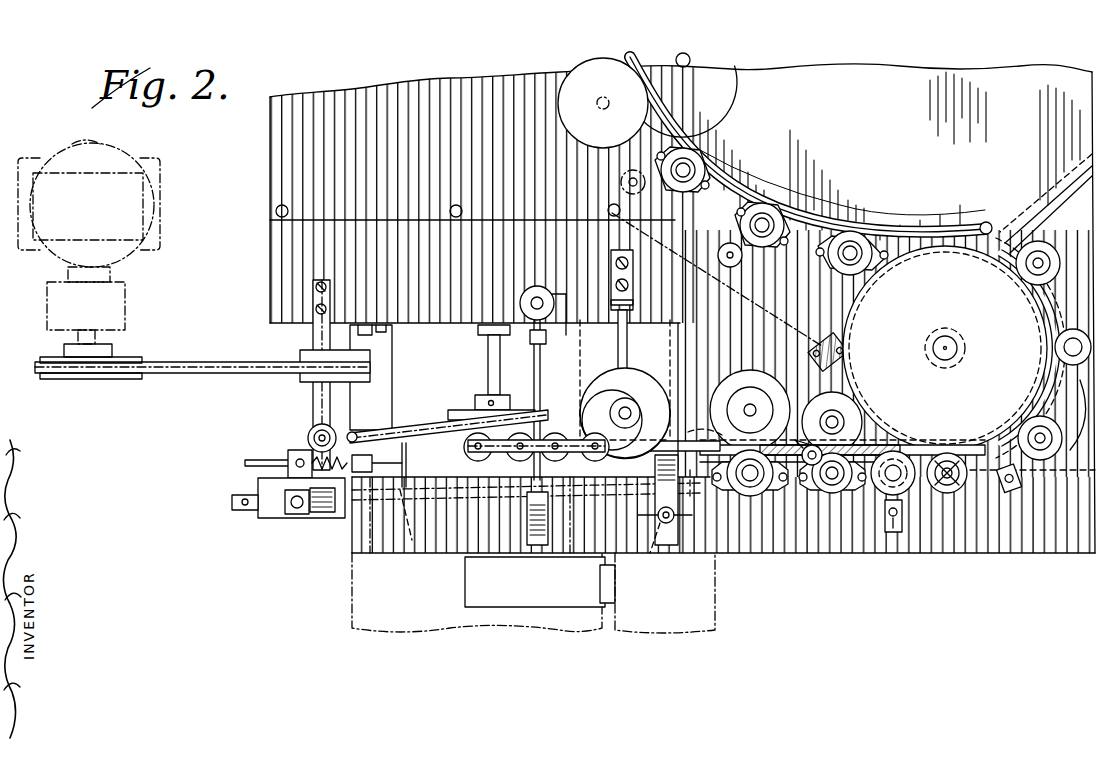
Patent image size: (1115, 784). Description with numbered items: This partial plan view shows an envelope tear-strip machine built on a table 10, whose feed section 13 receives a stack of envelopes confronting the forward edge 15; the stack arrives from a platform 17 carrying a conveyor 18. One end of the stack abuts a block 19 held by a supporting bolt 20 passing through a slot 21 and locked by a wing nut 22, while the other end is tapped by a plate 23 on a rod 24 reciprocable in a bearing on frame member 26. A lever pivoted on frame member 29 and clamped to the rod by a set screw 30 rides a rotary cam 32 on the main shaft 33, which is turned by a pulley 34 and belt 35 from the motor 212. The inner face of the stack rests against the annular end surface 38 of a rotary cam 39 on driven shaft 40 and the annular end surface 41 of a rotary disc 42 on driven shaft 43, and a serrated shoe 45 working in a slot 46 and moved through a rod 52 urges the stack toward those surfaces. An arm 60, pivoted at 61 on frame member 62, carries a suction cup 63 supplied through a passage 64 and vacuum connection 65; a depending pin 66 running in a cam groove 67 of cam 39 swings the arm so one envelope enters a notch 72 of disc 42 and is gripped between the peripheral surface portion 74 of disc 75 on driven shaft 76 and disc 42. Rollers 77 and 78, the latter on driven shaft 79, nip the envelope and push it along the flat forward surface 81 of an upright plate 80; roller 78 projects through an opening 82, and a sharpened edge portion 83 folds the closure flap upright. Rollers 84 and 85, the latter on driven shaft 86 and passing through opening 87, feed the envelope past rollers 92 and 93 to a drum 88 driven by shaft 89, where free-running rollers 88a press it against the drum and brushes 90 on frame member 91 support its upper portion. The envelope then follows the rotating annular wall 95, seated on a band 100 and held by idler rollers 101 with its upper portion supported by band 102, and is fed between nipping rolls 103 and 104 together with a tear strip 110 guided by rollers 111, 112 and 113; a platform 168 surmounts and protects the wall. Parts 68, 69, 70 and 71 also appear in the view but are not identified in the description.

The table 10 is at (1010, 553).
The feed section 13 is at (360, 530).
The forward edge 15 is at (822, 553).
The platform 17 is at (712, 610).
The conveyor 18 is at (480, 606).
The block 19 is at (668, 546).
The supporting bolt 20 is at (662, 560).
The slot 21 is at (695, 515).
The locking wing nut 22 is at (660, 522).
The plate 23 is at (406, 468).
The rod 24 is at (246, 463).
The frame member 26 is at (392, 355).
The frame member 29 is at (258, 490).
The set screw 30 is at (288, 470).
The rotary cam 32 is at (310, 438).
The shaft 33 is at (312, 382).
The pulley 34 is at (262, 358).
The belt 35 is at (190, 362).
The annular end surface 38 is at (432, 500).
The rotary cam 39 is at (450, 400).
The driven shaft 40 is at (488, 352).
The annular end surface 41 is at (570, 556).
The rotary disc 42 is at (540, 562).
The driven shaft 43 is at (634, 332).
The serrated surface shoe 45 is at (537, 520).
The slot 46 is at (540, 500).
The rod 52 is at (402, 522).
The arm 60 is at (432, 426).
The pivot 61 is at (318, 430).
The frame member 62 is at (313, 297).
The suction cup 63 is at (545, 425).
The passage 64 is at (413, 402).
The vacuum connection 65 is at (378, 400).
The pin 66 is at (508, 400).
The cam groove 67 is at (448, 442).
The roller 68 is at (520, 456).
The roller bar 69 is at (536, 447).
The roller 70 is at (480, 456).
The pulley 71 is at (520, 303).
The notch 72 is at (616, 490).
The peripheral surface portion 74 is at (656, 394).
The rotating disc 75 is at (604, 385).
The driven shaft 76 is at (610, 408).
The roller 77 is at (762, 497).
The roller 78 is at (768, 372).
The driven shaft 79 is at (750, 390).
The plate 80 is at (720, 442).
The flat forward surface 81 is at (700, 475).
The opening 82 is at (716, 443).
The sharpened edge portion 83 is at (782, 388).
The roller 84 is at (840, 495).
The roller 85 is at (830, 398).
The driven shaft 86 is at (840, 420).
The opening 87 is at (876, 440).
The drum 88 is at (954, 348).
The free-running rollers 88a is at (1012, 492).
The driven shaft 89 is at (955, 342).
The brushes 90 is at (1062, 440).
The frame member 91 is at (1060, 292).
The roller 92 is at (810, 466).
The roller 93 is at (902, 534).
The annular upright wall 95 is at (1060, 198).
The band 100 is at (640, 138).
The idler rollers 101 is at (706, 168).
The band 102 is at (822, 206).
The nipping roll 103 is at (520, 70).
The nipping roll 104 is at (734, 62).
The tear strip 110 is at (770, 300).
The guide roller 111 is at (846, 352).
The guide roller 112 is at (722, 263).
The guide roller 113 is at (620, 182).
The platform 168 is at (1042, 80).
The motor 212 is at (128, 196).